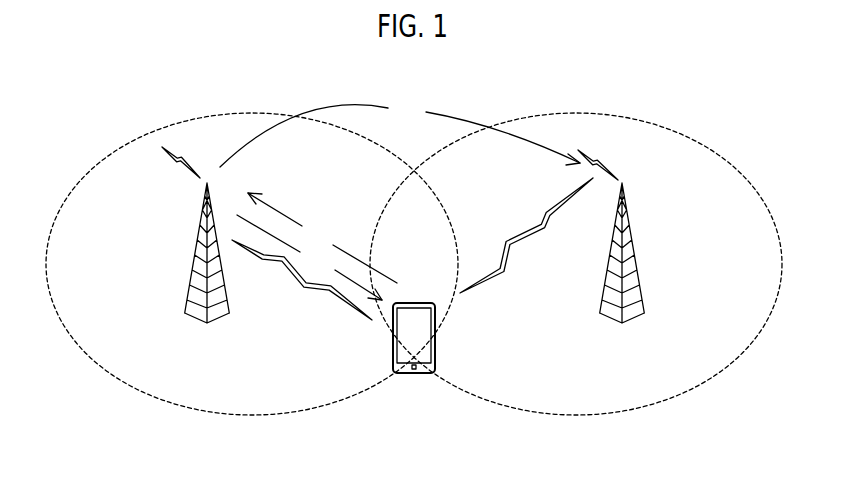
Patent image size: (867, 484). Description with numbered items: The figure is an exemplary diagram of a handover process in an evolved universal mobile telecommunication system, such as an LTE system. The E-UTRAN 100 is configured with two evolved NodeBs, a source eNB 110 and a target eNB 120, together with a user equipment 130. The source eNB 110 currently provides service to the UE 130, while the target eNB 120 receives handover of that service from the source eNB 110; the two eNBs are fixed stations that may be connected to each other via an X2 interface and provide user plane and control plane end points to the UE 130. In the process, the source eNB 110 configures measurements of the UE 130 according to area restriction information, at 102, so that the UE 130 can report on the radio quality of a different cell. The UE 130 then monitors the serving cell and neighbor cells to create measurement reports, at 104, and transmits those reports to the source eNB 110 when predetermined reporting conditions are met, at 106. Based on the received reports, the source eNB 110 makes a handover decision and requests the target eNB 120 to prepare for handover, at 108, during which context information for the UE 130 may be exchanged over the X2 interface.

The E-UMTS terrestrial radio access network (E-UTRAN) 100 is at (610, 84).
The measurement configuration step 102 is at (307, 267).
The cell monitoring step 104 is at (495, 238).
The measurement report transmission step 106 is at (322, 238).
The handover request step 108 is at (400, 133).
The source eNB 110 is at (193, 258).
The target eNB 120 is at (635, 258).
The user equipment (UE) 130 is at (437, 350).